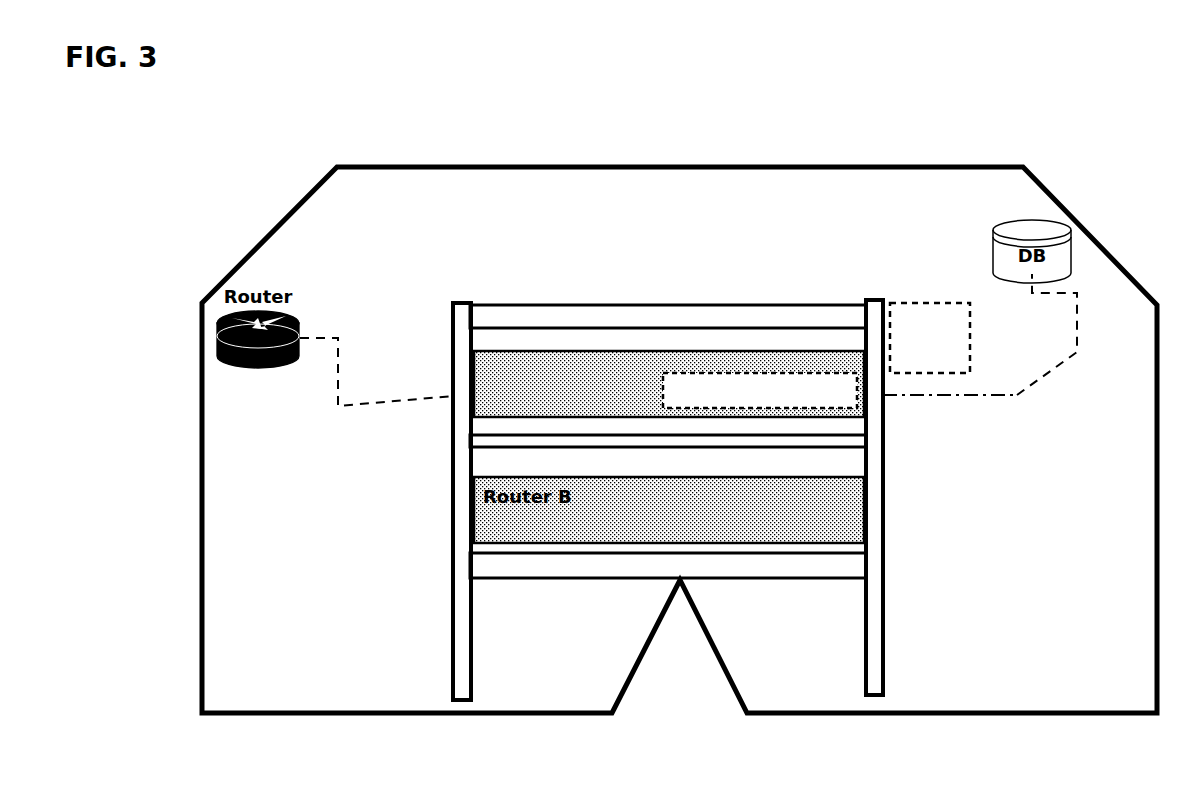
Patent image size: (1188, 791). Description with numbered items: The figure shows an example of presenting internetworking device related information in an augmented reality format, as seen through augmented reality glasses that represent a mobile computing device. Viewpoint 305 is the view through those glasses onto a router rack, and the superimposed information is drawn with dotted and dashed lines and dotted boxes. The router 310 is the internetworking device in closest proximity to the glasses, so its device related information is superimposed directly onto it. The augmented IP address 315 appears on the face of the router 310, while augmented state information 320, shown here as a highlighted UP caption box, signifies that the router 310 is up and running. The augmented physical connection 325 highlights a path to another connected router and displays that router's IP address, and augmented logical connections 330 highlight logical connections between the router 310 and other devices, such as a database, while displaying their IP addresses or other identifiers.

The viewpoint 305 is at (1024, 163).
The router 310 is at (571, 349).
The augmented IP address 315 is at (760, 370).
The augmented state information 320 is at (929, 301).
The augmented physical connection 325 is at (404, 396).
The augmented logical connections 330 is at (1019, 401).